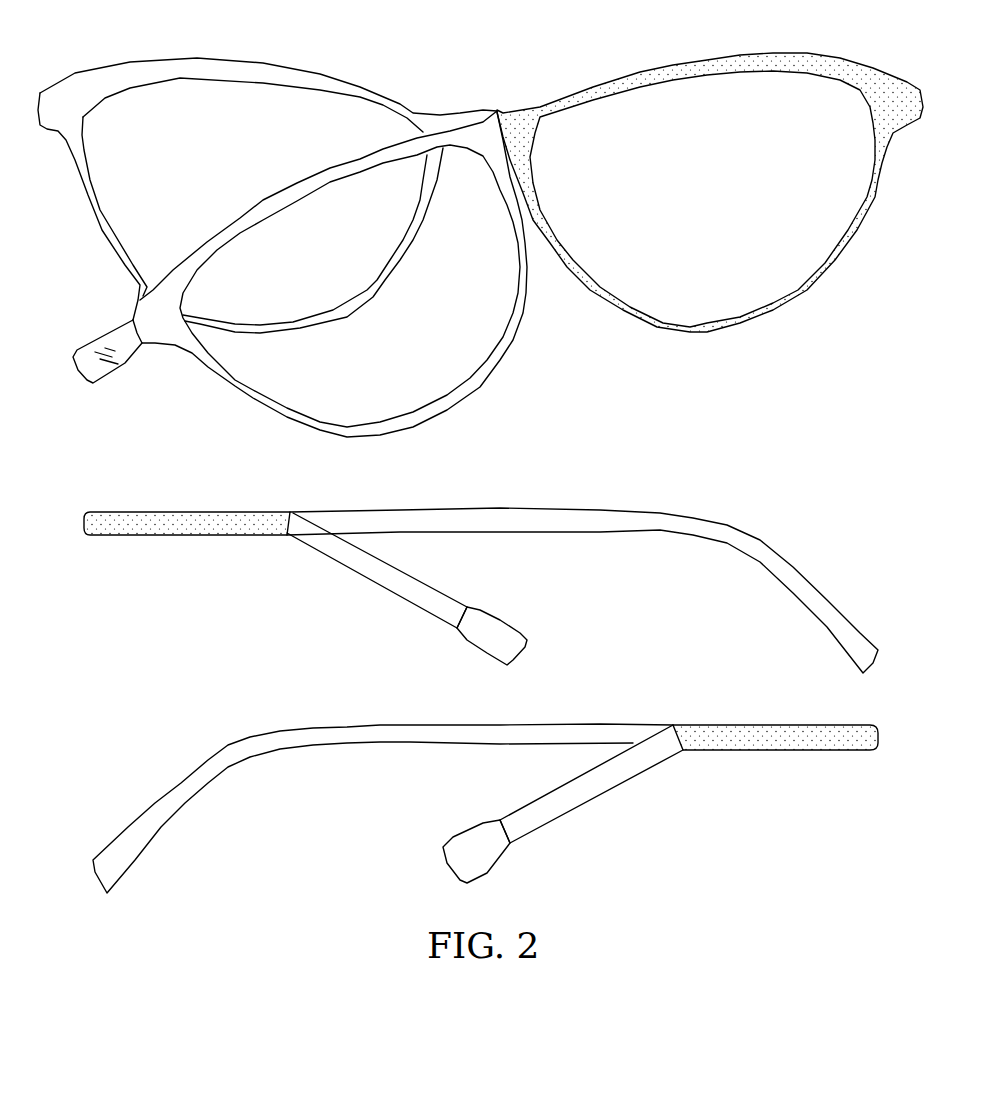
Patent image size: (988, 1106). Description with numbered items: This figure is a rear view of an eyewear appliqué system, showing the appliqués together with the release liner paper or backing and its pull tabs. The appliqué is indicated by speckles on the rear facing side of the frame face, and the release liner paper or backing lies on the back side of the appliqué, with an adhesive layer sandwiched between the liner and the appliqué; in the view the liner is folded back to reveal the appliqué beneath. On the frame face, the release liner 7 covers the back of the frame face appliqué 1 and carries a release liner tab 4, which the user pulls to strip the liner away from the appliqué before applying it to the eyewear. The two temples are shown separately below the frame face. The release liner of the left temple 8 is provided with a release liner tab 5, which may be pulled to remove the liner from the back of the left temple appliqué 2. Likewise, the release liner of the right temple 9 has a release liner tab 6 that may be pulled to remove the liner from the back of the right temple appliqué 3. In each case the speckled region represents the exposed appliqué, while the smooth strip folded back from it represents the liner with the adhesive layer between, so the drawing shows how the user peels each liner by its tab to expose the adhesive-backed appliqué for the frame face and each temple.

The frame face appliqué 1 is at (853, 240).
The left temple appliqué 2 is at (785, 750).
The right temple appliqué 3 is at (180, 512).
The release liner tab 4 is at (93, 337).
The release liner tab 5 is at (447, 867).
The release liner tab 6 is at (518, 652).
The release liner on the frame face appliqué 7 is at (131, 58).
The release liner of the left temple 8 is at (230, 748).
The release liner of the right temple 9 is at (737, 535).